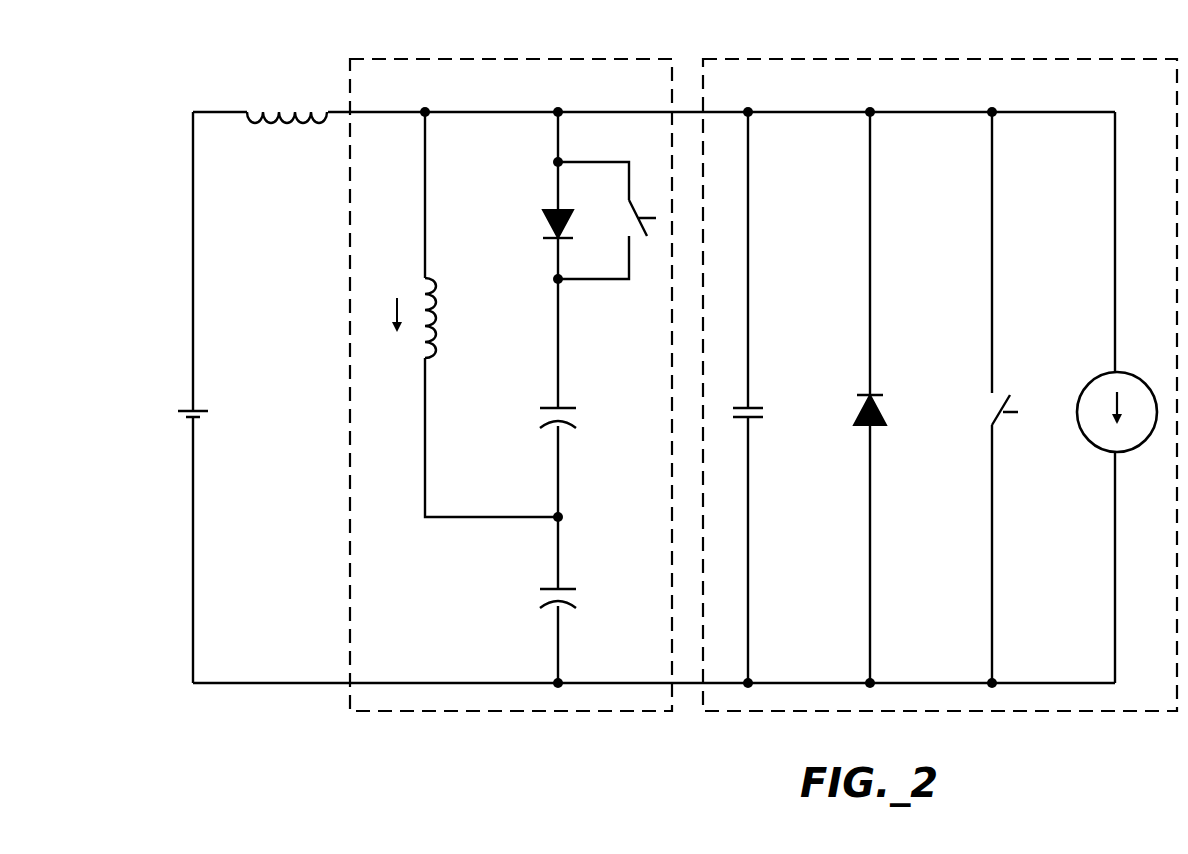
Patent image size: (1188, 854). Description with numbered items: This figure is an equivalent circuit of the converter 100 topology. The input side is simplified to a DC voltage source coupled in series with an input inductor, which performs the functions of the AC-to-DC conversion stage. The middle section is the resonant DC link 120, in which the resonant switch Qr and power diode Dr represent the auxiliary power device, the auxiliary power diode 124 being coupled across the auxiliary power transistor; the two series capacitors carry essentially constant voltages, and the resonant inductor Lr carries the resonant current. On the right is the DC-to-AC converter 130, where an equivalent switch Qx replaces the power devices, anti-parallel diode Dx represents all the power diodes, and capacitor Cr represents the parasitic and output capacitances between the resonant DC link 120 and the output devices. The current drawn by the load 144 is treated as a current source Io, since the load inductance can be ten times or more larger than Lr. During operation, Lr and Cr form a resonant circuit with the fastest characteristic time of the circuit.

The converter 100 is at (671, 752).
The resonant DC link 120 is at (528, 57).
The auxiliary power diode 124 is at (540, 226).
The DC-to-AC converter 130 is at (992, 57).
The load 144 is at (1103, 456).